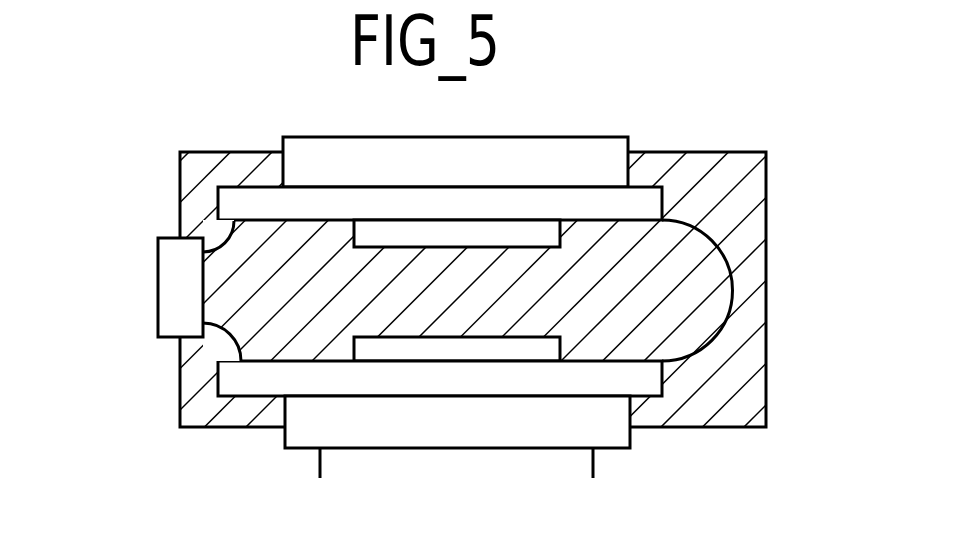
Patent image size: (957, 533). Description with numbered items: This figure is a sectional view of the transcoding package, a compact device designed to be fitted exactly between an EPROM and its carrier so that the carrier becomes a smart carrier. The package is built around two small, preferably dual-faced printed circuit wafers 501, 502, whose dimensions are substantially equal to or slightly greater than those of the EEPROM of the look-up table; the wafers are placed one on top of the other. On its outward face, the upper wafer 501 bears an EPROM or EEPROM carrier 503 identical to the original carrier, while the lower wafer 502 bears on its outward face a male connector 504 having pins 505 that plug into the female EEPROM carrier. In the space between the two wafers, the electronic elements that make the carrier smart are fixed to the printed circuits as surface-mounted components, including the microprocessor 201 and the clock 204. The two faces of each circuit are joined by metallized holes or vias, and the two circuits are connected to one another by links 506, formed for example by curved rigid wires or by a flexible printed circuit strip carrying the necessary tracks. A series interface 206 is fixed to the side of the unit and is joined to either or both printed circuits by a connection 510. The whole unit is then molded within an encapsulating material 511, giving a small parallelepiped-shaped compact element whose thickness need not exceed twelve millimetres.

The encapsulating material 511 is at (199, 168).
The connection 510 is at (213, 243).
The series interface 206 is at (178, 280).
The EPROM or EEPROM carrier 503 is at (568, 153).
The printed circuit wafer 501 is at (645, 200).
The microprocessor 201 is at (463, 224).
The clock 204 is at (453, 358).
The printed circuit wafer 502 is at (647, 383).
The pins 505 is at (316, 450).
The male connector 504 is at (613, 433).
The links 506 is at (728, 282).